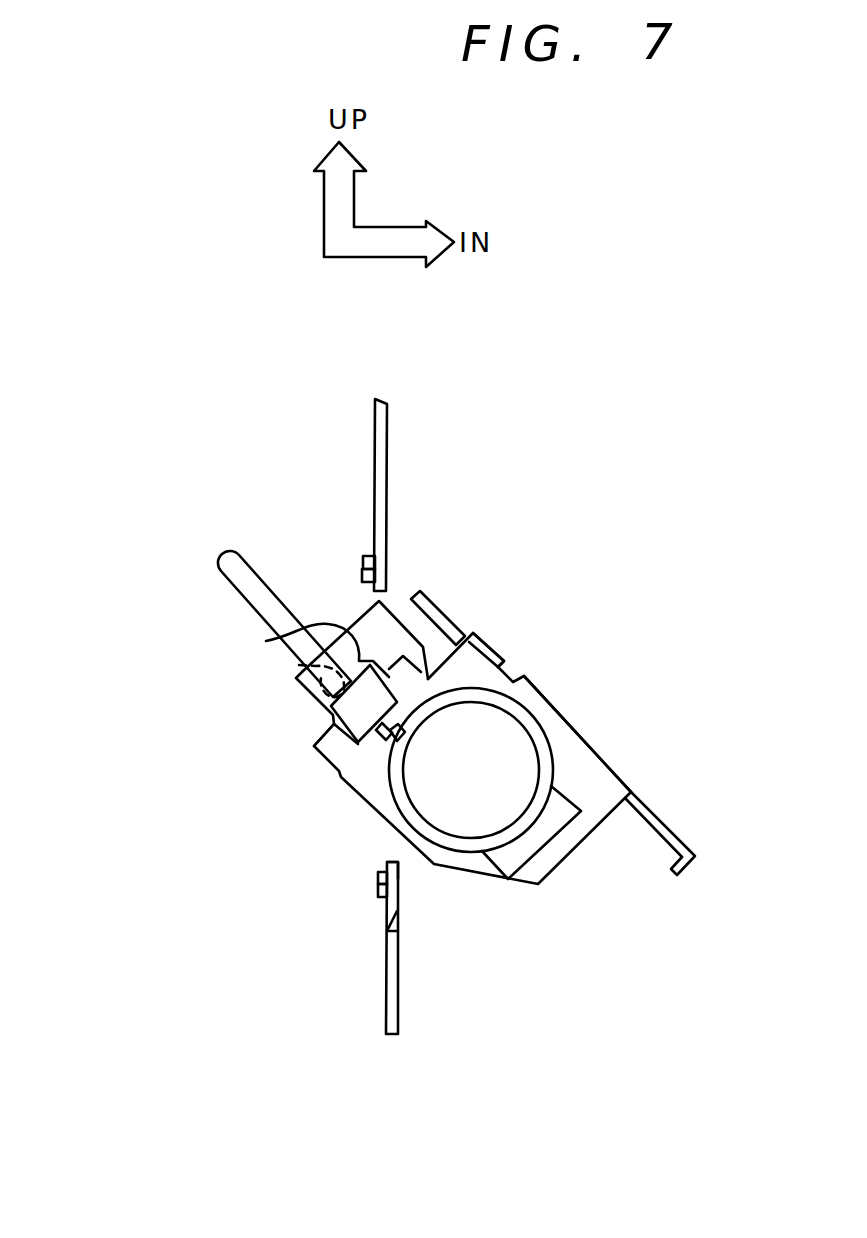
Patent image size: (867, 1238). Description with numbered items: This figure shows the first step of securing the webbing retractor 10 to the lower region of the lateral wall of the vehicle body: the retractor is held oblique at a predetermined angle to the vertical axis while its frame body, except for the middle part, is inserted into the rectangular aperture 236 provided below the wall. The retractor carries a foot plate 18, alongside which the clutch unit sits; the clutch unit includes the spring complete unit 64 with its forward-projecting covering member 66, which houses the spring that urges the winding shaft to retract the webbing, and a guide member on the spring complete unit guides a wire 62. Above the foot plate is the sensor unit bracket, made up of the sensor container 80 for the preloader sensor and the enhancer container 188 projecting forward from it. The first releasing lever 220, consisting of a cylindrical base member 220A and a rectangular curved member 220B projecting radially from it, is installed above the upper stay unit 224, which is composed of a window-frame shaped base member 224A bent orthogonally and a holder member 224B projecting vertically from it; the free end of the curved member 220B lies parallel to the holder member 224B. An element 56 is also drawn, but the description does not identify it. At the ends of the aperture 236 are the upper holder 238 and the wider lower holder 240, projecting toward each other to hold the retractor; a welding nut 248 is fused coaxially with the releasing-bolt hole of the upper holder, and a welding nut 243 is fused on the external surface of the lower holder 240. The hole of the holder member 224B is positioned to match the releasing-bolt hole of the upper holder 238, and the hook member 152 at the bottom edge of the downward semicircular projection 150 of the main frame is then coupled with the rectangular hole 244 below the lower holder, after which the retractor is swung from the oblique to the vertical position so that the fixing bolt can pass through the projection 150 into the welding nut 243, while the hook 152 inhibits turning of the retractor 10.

The webbing retractor 10 is at (147, 572).
The foot plate 18 is at (488, 876).
The rod 56 is at (219, 558).
The wire 62 is at (333, 762).
The spring complete unit 64 is at (562, 728).
The covering member 66 is at (427, 777).
The sensor container 80 is at (385, 601).
The semicircular projection 150 is at (658, 822).
The hook member 152 is at (683, 873).
The enhancer container 188 is at (333, 712).
The first releasing lever 220 is at (108, 617).
The cylindrical base member 220A is at (298, 666).
The curved member 220B is at (265, 642).
The upper stay unit 224 is at (625, 566).
The base member 224A is at (497, 660).
The holder member 224B is at (440, 622).
The rectangular aperture 236 is at (391, 863).
The upper holder 238 is at (387, 463).
The lower holder 240 is at (386, 986).
The welding nut 243 is at (377, 886).
The rectangular hole 244 is at (390, 916).
The welding nut 248 is at (361, 563).